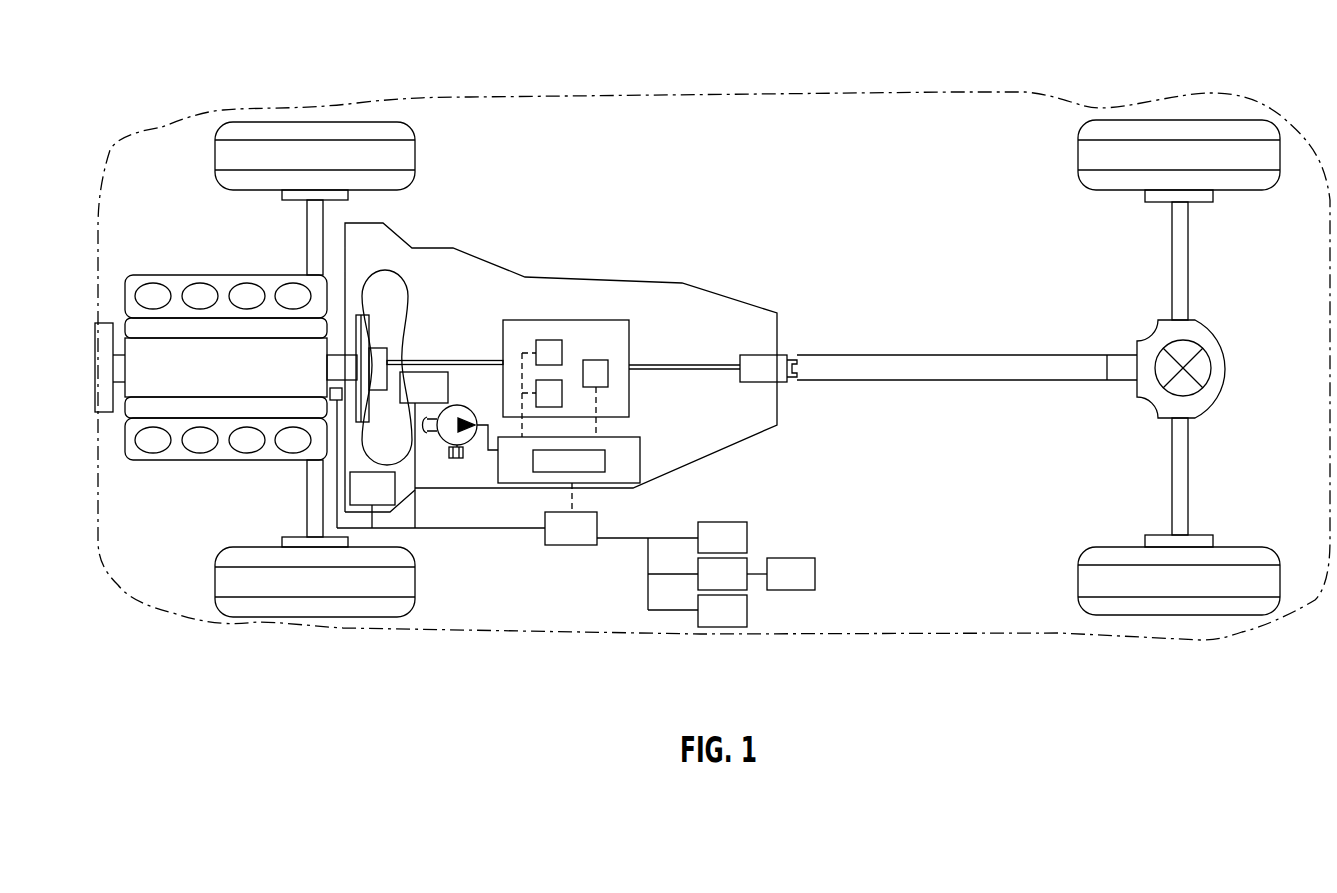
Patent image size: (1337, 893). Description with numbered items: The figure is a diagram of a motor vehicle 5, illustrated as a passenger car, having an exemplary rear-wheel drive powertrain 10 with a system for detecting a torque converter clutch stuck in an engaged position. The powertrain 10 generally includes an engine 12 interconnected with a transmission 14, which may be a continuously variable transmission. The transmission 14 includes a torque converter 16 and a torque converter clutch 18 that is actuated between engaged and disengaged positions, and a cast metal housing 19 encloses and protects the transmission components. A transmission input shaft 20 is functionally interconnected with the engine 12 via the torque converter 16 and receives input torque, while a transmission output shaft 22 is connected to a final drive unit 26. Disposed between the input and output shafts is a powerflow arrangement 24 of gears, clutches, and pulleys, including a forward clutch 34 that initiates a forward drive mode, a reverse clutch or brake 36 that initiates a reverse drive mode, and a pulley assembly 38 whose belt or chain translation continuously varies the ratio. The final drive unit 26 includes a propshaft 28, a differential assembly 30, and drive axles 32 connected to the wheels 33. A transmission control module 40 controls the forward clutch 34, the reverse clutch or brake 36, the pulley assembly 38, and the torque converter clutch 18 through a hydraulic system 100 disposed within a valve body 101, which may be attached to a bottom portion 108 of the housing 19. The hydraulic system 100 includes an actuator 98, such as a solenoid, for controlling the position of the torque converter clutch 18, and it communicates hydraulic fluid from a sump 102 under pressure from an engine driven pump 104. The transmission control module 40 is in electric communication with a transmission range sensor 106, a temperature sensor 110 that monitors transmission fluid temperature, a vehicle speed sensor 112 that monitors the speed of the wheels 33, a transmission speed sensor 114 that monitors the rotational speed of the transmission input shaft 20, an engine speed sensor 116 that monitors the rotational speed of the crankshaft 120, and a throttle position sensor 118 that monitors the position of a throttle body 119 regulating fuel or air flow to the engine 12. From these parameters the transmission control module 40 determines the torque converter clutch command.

The motor vehicle 5 is at (730, 95).
The powertrain 10 is at (740, 190).
The engine 12 is at (190, 384).
The transmission 14 is at (550, 256).
The torque converter 16 is at (382, 276).
The torque converter clutch 18 is at (371, 391).
The housing 19 is at (733, 297).
The transmission input shaft 20 is at (408, 361).
The transmission output shaft 22 is at (690, 369).
The powerflow arrangement 24 is at (608, 320).
The final drive unit 26 is at (1056, 303).
The propshaft 28 is at (975, 355).
The differential assembly 30 is at (1228, 366).
The drive axles 32 is at (1190, 272).
The wheels 33 is at (1241, 189).
The forward clutch 34 is at (548, 340).
The reverse clutch or brake 36 is at (565, 395).
The pulley assembly 38 is at (605, 358).
The transmission control module 40 is at (573, 547).
The actuator 98 is at (604, 462).
The hydraulic system 100 is at (642, 452).
The valve body 101 is at (506, 437).
The sump 102 is at (462, 462).
The pump 104 is at (449, 449).
The transmission range sensor 106 is at (722, 538).
The bottom portion 108 is at (676, 486).
The temperature sensor 110 is at (372, 500).
The vehicle speed sensor 112 is at (722, 611).
The transmission speed sensor 114 is at (424, 388).
The engine speed sensor 116 is at (330, 392).
The throttle position sensor 118 is at (732, 574).
The throttle body 119 is at (791, 574).
The crankshaft 120 is at (338, 370).